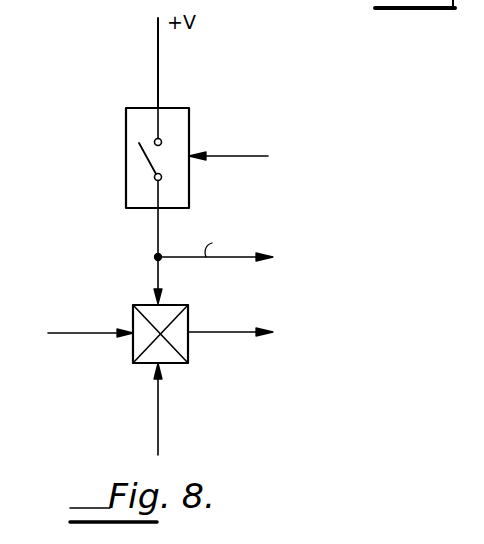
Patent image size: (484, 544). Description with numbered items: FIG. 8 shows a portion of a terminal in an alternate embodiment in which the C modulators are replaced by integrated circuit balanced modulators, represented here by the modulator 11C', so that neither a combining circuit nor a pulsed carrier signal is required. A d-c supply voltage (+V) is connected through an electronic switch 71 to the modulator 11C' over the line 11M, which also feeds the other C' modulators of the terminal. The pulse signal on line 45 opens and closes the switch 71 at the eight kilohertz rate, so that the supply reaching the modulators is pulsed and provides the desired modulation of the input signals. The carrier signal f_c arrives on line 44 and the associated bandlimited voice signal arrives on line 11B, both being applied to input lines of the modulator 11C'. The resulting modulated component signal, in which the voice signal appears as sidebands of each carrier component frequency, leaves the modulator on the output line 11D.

The electronic switch 71 is at (175, 108).
The pulse signal line 45 is at (226, 156).
The switch output line 11M is at (158, 270).
The integrated circuit balanced modulator 11C' is at (182, 336).
The bandlimited voice signal line 11B is at (82, 333).
The modulated output line 11D is at (210, 332).
The carrier signal line 44 is at (158, 412).